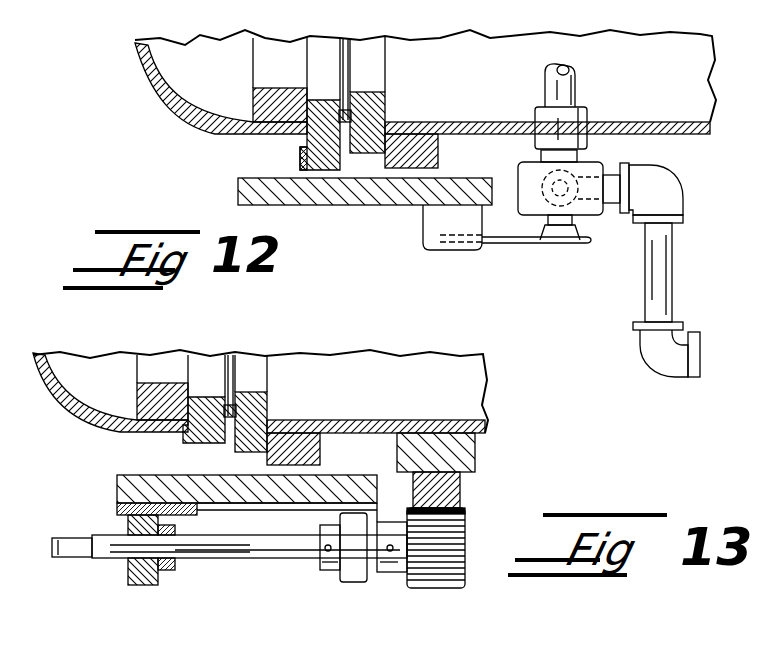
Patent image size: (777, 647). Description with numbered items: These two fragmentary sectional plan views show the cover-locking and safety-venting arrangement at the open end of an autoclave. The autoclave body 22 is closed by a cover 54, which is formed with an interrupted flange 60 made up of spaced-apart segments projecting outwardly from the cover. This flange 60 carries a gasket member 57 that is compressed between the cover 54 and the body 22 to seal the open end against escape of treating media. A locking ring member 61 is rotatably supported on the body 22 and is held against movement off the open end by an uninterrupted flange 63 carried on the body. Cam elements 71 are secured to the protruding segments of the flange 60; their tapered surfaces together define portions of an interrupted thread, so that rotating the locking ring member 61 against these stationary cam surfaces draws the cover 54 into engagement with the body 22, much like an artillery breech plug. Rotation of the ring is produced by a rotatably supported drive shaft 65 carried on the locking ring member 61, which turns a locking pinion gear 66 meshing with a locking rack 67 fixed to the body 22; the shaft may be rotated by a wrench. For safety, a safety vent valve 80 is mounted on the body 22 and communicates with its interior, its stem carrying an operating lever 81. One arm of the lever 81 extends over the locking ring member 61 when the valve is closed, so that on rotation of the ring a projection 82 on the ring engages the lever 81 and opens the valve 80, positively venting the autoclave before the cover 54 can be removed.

In FIG. 13, the autoclave body 22 is at (483, 425).
In FIG. 12, the cover 54 is at (150, 80).
In FIG. 13, the cover 54 is at (70, 413).
In FIG. 12, the gasket member 57 is at (348, 108).
In FIG. 13, the gasket member 57 is at (237, 405).
In FIG. 12, the interrupted flange 60 is at (316, 102).
In FIG. 13, the interrupted flange 60 is at (206, 397).
In FIG. 12, the locking ring member 61 is at (347, 205).
In FIG. 13, the locking ring member 61 is at (135, 490).
In FIG. 12, the uninterrupted flange 63 is at (402, 132).
In FIG. 13, the uninterrupted flange 63 is at (292, 440).
In FIG. 13, the drive shaft 65 is at (263, 557).
In FIG. 13, the locking pinion gear 66 is at (447, 588).
In FIG. 13, the locking rack 67 is at (452, 497).
In FIG. 12, the cam elements 71 is at (300, 158).
In FIG. 12, the safety vent valve 80 is at (523, 168).
In FIG. 12, the operating lever 81 is at (515, 243).
In FIG. 12, the projection 82 is at (460, 250).